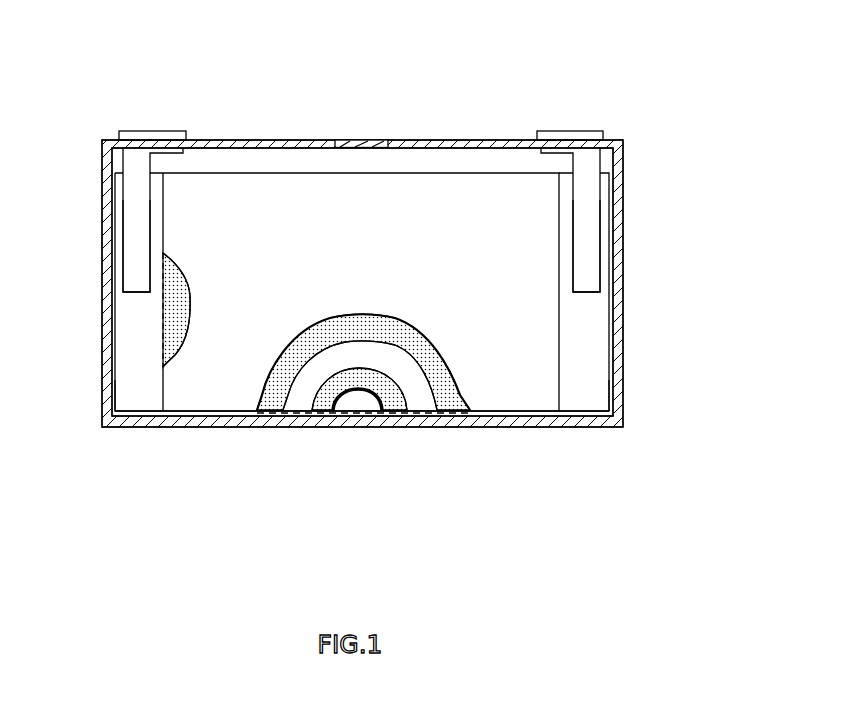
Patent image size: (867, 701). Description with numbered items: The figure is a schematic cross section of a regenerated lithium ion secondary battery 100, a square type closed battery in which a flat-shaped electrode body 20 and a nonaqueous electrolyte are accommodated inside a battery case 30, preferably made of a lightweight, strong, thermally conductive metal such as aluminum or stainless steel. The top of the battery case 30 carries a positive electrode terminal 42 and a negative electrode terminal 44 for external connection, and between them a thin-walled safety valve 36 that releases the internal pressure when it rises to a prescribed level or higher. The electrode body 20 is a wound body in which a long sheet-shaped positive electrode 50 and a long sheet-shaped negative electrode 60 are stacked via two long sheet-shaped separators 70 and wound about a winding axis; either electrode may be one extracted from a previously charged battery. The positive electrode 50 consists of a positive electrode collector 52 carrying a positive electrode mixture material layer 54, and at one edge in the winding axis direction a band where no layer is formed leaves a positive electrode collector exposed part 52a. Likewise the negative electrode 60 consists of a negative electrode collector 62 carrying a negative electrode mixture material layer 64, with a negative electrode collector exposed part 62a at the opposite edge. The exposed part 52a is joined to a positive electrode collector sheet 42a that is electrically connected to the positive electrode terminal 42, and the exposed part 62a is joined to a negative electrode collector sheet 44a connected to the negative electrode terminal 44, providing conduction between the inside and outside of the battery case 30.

The regenerated lithium ion secondary battery 100 is at (640, 68).
The electrode body 20 is at (285, 168).
The battery case 30 is at (625, 248).
The safety valve 36 is at (372, 140).
The positive electrode terminal 42 is at (163, 130).
The positive electrode collector sheet 42a is at (138, 210).
The negative electrode terminal 44 is at (583, 130).
The negative electrode collector sheet 44a is at (590, 207).
The positive electrode 50 is at (275, 406).
The positive electrode collector 52 is at (115, 312).
The positive electrode collector exposed part 52a is at (128, 384).
The positive electrode mixture material layer 54 is at (190, 285).
The negative electrode 60 is at (359, 443).
The negative electrode collector 62 is at (610, 317).
The negative electrode collector exposed part 62a is at (592, 378).
The negative electrode mixture material layer 64 is at (325, 400).
The separator 70 is at (207, 363).